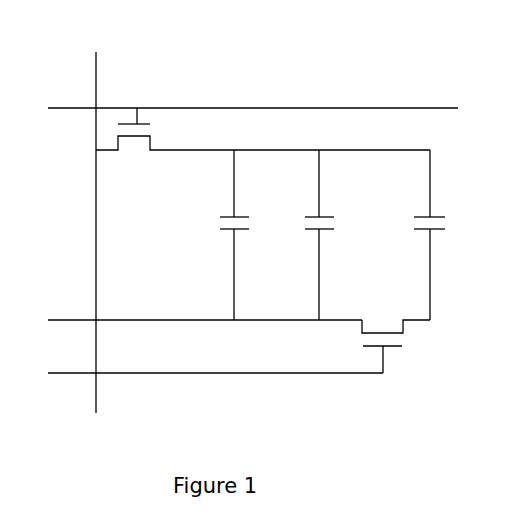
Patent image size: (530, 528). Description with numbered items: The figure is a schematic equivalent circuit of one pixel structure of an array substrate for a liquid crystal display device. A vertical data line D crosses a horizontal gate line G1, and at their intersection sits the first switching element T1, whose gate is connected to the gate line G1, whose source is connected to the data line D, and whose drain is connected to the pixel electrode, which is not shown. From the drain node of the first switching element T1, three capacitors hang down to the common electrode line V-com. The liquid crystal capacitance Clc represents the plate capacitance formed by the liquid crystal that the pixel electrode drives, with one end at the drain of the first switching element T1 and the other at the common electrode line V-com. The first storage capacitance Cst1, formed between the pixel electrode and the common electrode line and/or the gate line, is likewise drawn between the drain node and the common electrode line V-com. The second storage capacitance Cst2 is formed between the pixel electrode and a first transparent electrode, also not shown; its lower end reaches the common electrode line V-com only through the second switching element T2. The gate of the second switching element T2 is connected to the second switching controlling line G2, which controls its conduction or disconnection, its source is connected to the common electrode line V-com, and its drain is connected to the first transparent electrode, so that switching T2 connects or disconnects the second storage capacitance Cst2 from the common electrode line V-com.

The data line D is at (106, 228).
The gate line G1 is at (252, 98).
The second switching controlling line G2 is at (214, 362).
The common electrode line V-com is at (199, 310).
The first switching element T1 is at (128, 143).
The second switching element T2 is at (396, 338).
The liquid crystal capacitance Clc is at (225, 235).
The first storage capacitance Cst1 is at (307, 235).
The second storage capacitance Cst2 is at (418, 235).